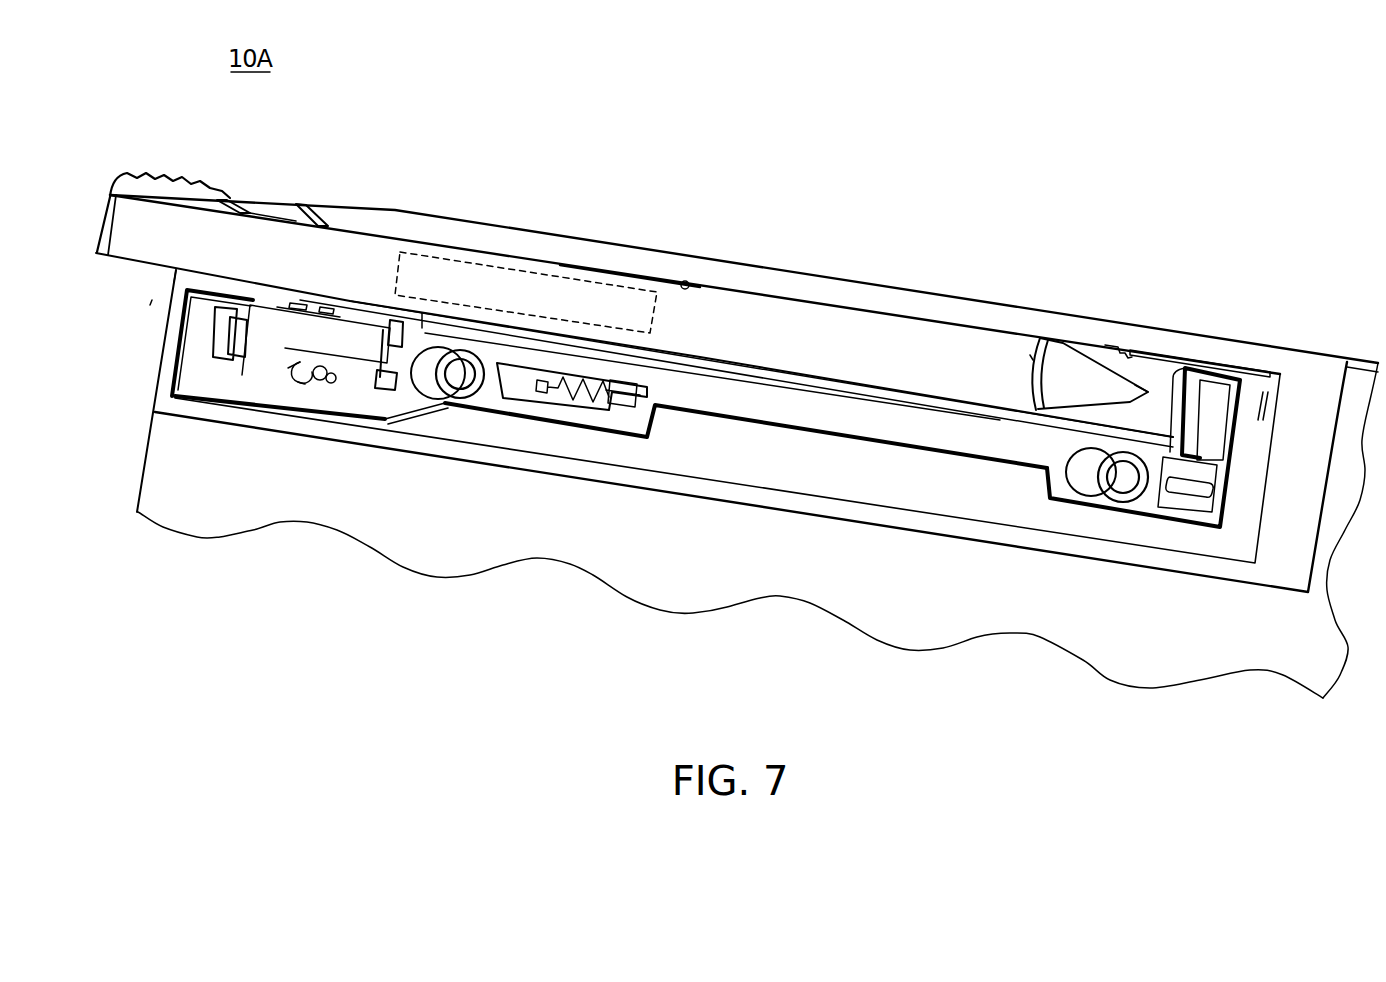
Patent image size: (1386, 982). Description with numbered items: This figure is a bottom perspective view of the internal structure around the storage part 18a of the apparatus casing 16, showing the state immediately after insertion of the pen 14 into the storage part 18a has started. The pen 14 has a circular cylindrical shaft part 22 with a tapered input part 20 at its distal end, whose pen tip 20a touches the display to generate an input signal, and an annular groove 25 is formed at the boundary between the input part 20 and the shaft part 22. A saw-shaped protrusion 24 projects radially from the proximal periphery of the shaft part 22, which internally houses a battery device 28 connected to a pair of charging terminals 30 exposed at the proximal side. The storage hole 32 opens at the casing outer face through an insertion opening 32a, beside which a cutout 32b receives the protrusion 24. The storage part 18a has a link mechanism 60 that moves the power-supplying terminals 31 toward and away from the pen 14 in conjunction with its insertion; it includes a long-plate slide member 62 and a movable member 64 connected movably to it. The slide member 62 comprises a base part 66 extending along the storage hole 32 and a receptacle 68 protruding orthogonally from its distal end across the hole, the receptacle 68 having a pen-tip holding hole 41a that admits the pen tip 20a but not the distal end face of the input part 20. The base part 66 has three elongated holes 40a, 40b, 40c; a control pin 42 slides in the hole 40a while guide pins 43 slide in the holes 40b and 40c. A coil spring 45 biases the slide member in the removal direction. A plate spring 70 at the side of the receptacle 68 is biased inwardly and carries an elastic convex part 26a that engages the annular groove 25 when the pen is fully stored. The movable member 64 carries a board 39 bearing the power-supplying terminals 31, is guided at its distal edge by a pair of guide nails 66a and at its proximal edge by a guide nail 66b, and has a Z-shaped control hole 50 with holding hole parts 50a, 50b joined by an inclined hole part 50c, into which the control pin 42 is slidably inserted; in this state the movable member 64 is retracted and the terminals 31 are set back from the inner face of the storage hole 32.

The pen 14 is at (633, 274).
The apparatus casing 16 is at (173, 460).
The storage part 18a is at (149, 302).
The input part 20 is at (1067, 363).
The pen tip 20a is at (1150, 382).
The shaft part 22 is at (732, 305).
The protrusion 24 is at (136, 184).
The annular groove 25 is at (1027, 362).
The elastic convex part 26a is at (1146, 350).
The battery device 28 is at (510, 267).
The terminals 30 is at (271, 292).
The power-supplying terminals 31 is at (321, 300).
The storage hole 32 is at (690, 282).
The insertion opening 32a is at (173, 277).
The cutout 32b is at (274, 205).
The board 39 is at (369, 320).
The elongated hole 40a is at (295, 358).
The elongated hole 40b is at (425, 432).
The elongated hole 40c is at (1085, 497).
The pen-tip holding hole 41a is at (1208, 440).
The control pin 42 is at (321, 382).
The guide pins 43 is at (473, 400).
The coil spring 45 is at (597, 440).
The control hole 50 is at (290, 385).
The holding hole part 50a is at (334, 386).
The holding hole part 50b is at (255, 385).
The inclined hole part 50c is at (312, 386).
The link mechanism 60 is at (862, 478).
The slide member 62 is at (560, 430).
The movable member 64 is at (390, 322).
The base part 66 is at (785, 412).
The guide nails 66a is at (416, 300).
The guide nail 66b is at (237, 333).
The receptacle 68 is at (1295, 450).
The plate spring 70 is at (1222, 362).